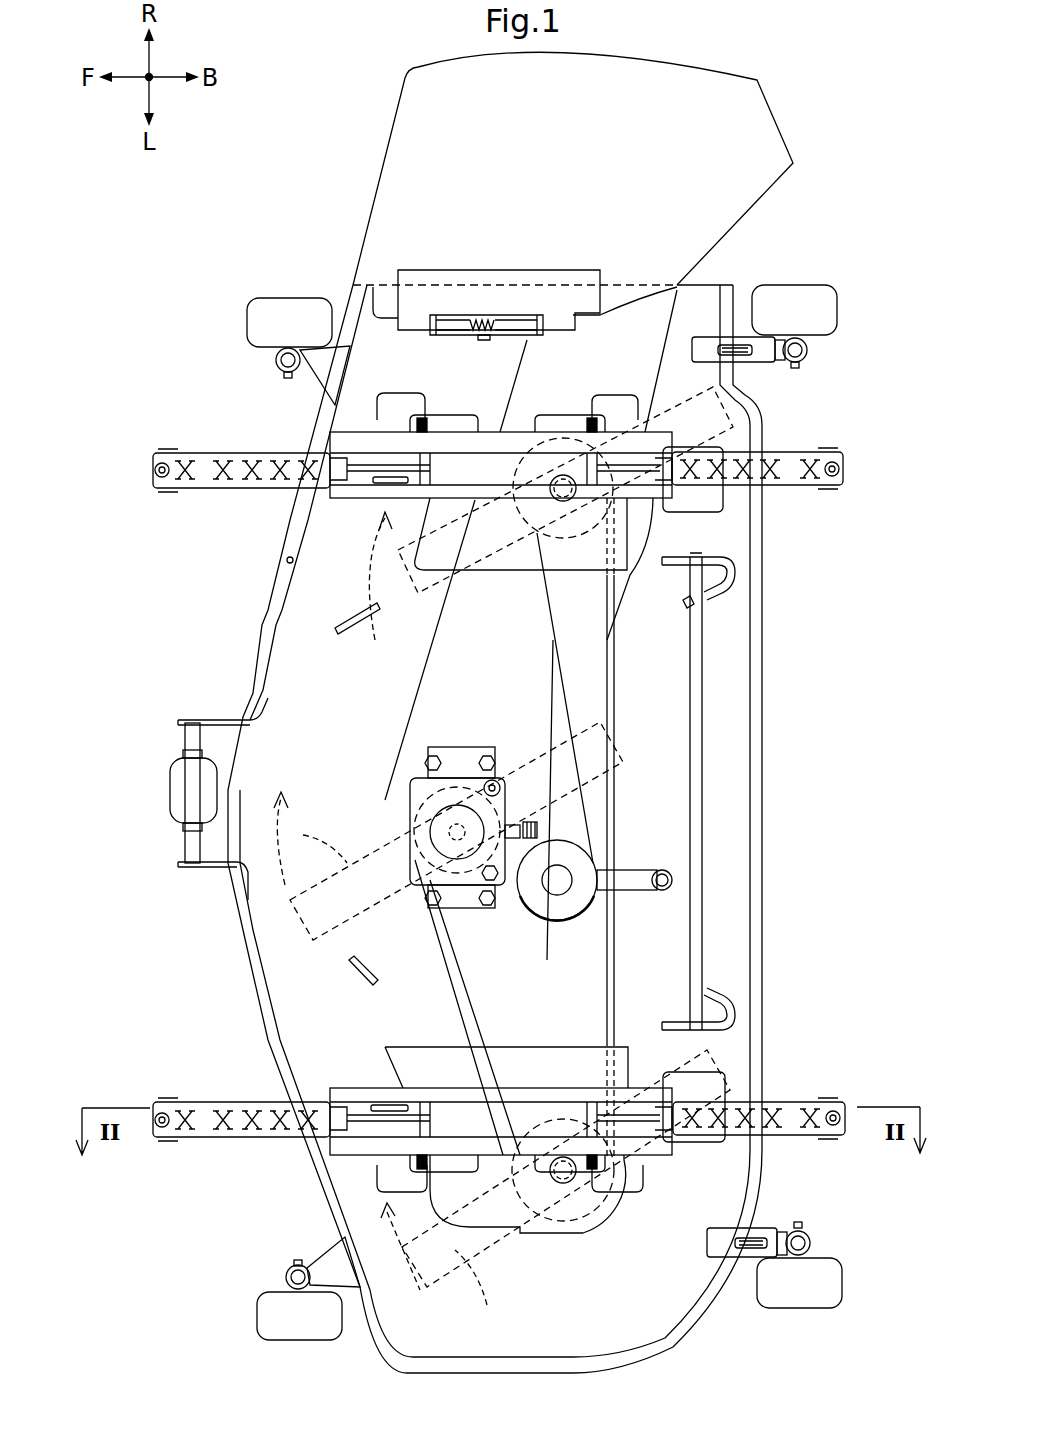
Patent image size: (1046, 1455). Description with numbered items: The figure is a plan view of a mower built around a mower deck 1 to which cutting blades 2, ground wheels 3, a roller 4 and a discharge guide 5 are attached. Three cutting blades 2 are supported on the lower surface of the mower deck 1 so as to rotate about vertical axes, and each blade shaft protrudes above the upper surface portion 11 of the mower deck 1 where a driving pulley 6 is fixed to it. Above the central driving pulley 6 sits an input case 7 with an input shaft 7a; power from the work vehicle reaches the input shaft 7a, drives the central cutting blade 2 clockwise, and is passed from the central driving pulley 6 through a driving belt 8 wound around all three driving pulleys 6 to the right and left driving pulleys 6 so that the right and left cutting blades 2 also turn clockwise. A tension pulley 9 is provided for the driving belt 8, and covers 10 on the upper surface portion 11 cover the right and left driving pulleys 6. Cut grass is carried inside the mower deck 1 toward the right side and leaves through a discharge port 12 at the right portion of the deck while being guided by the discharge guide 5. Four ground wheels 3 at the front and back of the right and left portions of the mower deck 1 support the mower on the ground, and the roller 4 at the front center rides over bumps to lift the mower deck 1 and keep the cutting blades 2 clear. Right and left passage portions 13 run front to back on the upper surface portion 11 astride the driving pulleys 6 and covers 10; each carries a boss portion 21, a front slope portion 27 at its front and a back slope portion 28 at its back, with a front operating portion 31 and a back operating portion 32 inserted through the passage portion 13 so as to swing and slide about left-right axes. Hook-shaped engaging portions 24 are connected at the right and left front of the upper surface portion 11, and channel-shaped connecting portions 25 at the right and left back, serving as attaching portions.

The mower deck 1 is at (772, 876).
The cutting blade 2 is at (503, 863).
The ground wheel 3 is at (268, 322).
The roller 4 is at (190, 795).
The discharge guide 5 is at (753, 140).
The driving pulley 6 is at (566, 450).
The input case 7 is at (410, 790).
The input shaft 7a is at (540, 830).
The driving belt 8 is at (600, 702).
The tension pulley 9 is at (540, 898).
The cover 10 is at (500, 566).
The upper surface portion 11 is at (668, 946).
The discharge port 12 is at (535, 272).
The passage portion 13 is at (486, 512).
The boss portion 21 is at (660, 540).
The hook-shaped engaging portion 24 is at (385, 485).
The connecting portion 25 is at (728, 498).
The front slope portion 27 is at (208, 458).
The back slope portion 28 is at (790, 462).
The front operating portion 31 is at (402, 392).
The back operating portion 32 is at (610, 394).